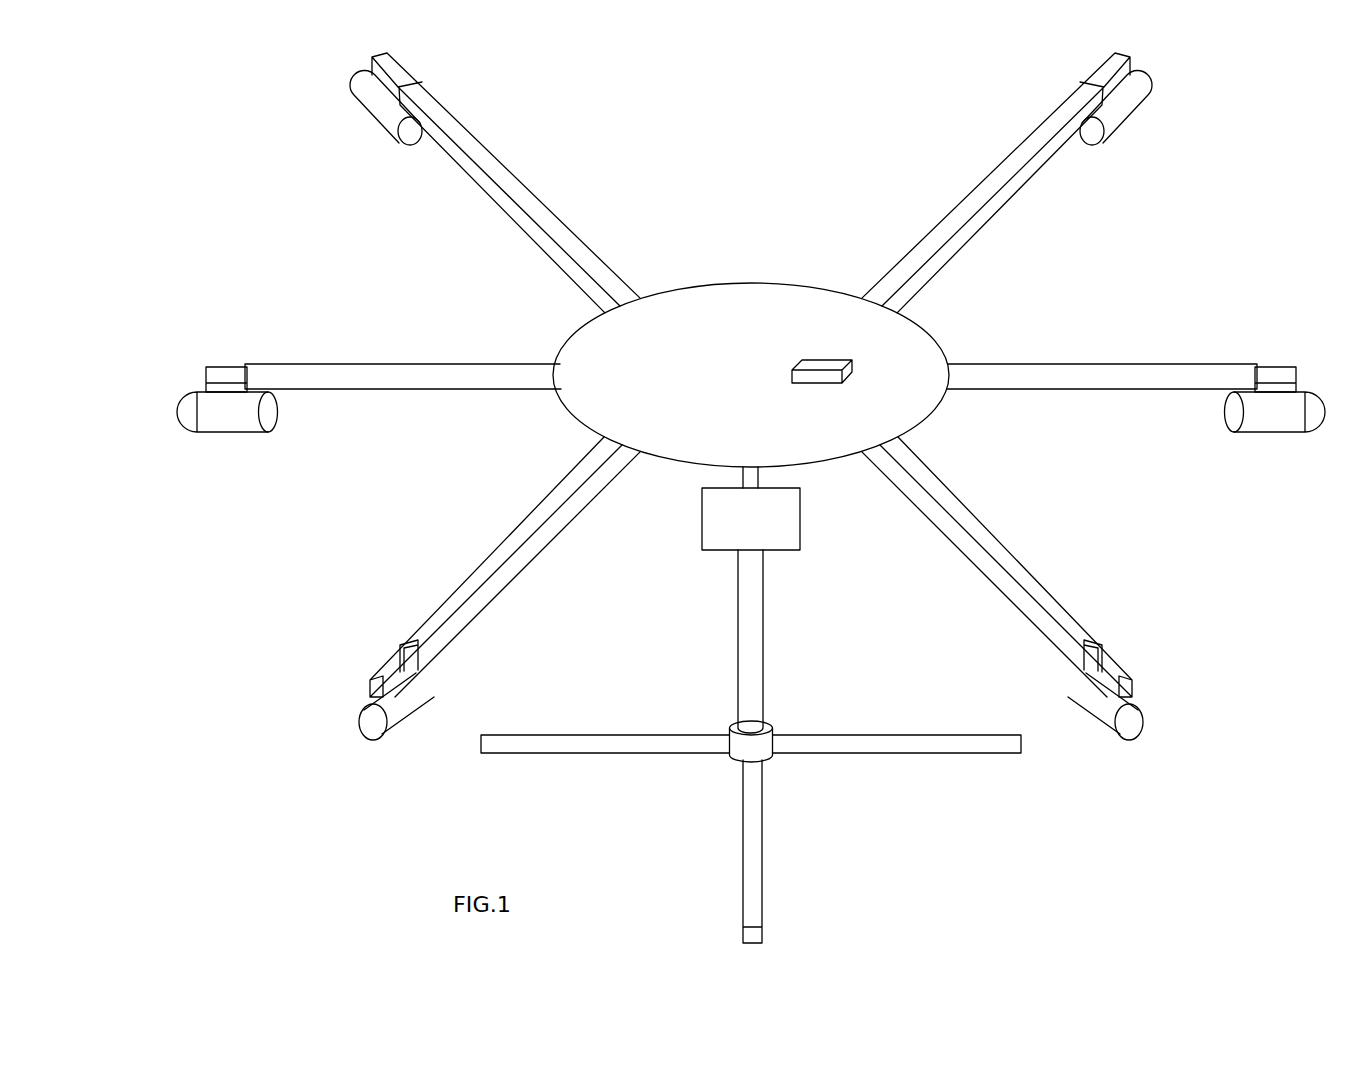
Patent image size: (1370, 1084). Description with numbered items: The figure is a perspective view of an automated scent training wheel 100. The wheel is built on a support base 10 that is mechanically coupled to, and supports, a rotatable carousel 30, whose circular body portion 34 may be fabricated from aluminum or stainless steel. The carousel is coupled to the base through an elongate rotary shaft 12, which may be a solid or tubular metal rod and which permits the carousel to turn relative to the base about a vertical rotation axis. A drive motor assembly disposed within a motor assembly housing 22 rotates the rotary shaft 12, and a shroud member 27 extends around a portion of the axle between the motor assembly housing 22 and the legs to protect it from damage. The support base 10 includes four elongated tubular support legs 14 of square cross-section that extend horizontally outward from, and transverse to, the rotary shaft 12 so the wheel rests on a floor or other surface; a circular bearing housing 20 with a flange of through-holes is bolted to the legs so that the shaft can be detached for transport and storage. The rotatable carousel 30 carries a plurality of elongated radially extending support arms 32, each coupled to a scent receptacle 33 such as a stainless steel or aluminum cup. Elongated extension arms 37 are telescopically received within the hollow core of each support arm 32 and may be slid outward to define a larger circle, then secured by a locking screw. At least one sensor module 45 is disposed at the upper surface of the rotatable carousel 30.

The automated scent training wheel 100 is at (1150, 258).
The support base 10 is at (960, 856).
The rotary shaft 12 is at (760, 477).
The support legs 14 is at (878, 738).
The bearing housing 20 is at (770, 728).
The motor assembly housing 22 is at (800, 531).
The shroud member 27 is at (766, 627).
The rotatable carousel 30 is at (712, 283).
The support arms 32 is at (538, 197).
The scent receptacle 33 is at (406, 750).
The circular body portion 34 is at (572, 420).
The extension arms 37 is at (376, 660).
The sensor module 45 is at (815, 358).